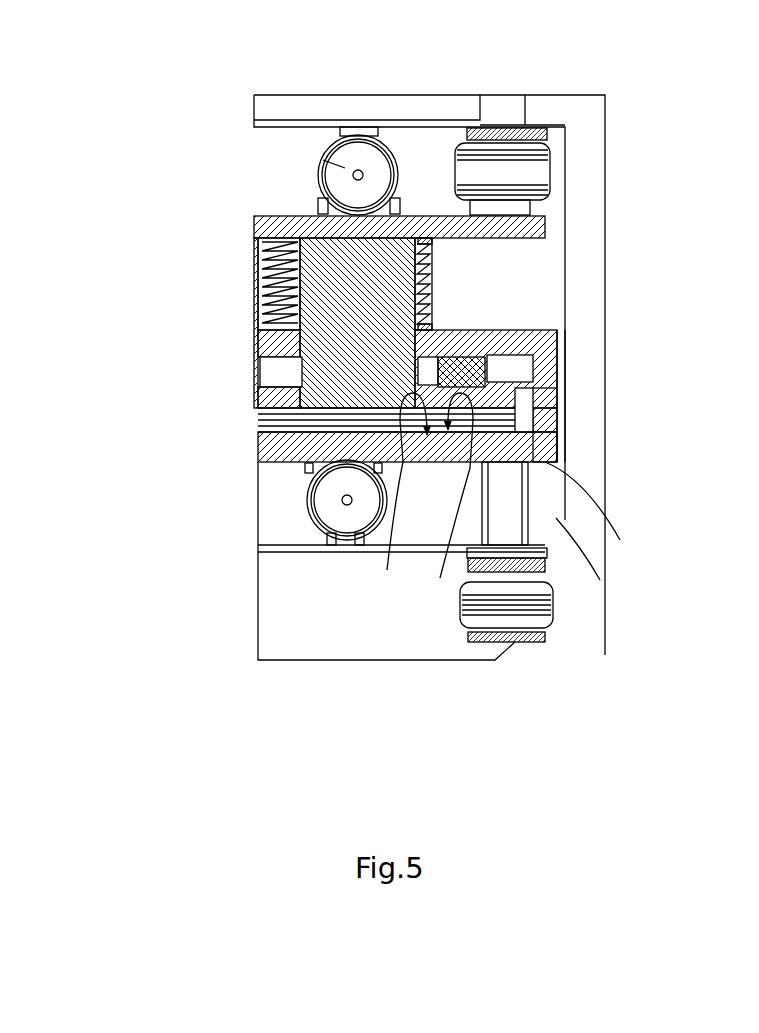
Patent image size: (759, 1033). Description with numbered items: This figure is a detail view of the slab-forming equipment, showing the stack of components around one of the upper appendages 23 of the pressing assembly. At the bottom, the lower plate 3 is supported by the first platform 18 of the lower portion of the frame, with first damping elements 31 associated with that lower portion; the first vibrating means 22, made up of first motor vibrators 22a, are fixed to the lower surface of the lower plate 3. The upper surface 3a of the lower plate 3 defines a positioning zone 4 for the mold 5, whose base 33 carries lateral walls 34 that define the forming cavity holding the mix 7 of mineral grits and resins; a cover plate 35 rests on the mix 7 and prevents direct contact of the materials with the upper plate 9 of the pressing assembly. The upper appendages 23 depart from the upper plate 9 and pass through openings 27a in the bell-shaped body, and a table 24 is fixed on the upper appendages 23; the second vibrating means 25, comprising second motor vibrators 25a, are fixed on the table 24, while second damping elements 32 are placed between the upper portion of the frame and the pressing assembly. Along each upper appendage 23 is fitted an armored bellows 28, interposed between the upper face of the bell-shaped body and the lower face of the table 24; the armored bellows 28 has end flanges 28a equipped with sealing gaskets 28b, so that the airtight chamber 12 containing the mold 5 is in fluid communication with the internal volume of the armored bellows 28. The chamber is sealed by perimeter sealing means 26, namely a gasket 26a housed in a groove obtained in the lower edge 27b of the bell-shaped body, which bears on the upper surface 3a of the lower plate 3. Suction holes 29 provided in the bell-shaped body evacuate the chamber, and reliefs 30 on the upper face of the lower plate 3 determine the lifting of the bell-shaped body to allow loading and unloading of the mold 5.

The lower plate 3 is at (303, 537).
The upper surface 3a is at (440, 510).
The positioning zone 4 is at (400, 499).
The mold 5 is at (247, 443).
The mix 7 is at (258, 424).
The upper plate 9 is at (538, 378).
The airtight chamber 12 is at (503, 372).
The first platform 18 is at (535, 520).
The first vibrating means 22 is at (300, 462).
The first motor vibrators 22a is at (347, 512).
The upper appendages 23 is at (335, 282).
The table 24 is at (535, 228).
The second vibrating means 25 is at (388, 130).
The second motor vibrators 25a is at (322, 158).
The perimeter sealing means 26 is at (545, 455).
The gasket 26a is at (545, 435).
The openings 27a is at (412, 347).
The lower edge 27b is at (553, 400).
The armored bellows 28 is at (275, 258).
The end flanges 28a is at (437, 244).
The sealing gaskets 28b is at (430, 246).
The suction holes 29 is at (585, 388).
The reliefs 30 is at (505, 362).
The first damping elements 31 is at (548, 608).
The second damping elements 32 is at (533, 166).
The base 33 is at (258, 458).
The lateral walls 34 is at (525, 425).
The cover plate 35 is at (258, 412).